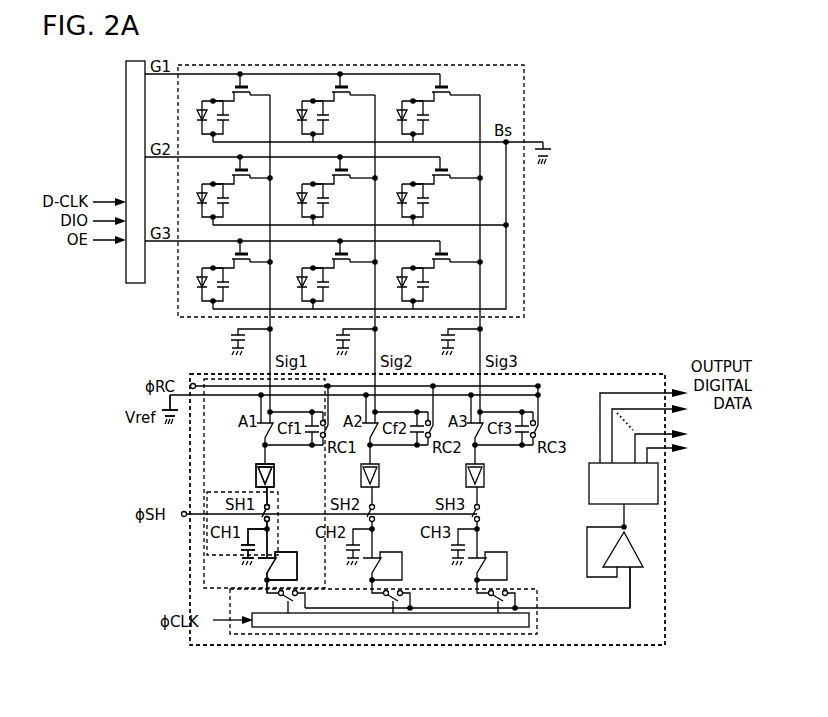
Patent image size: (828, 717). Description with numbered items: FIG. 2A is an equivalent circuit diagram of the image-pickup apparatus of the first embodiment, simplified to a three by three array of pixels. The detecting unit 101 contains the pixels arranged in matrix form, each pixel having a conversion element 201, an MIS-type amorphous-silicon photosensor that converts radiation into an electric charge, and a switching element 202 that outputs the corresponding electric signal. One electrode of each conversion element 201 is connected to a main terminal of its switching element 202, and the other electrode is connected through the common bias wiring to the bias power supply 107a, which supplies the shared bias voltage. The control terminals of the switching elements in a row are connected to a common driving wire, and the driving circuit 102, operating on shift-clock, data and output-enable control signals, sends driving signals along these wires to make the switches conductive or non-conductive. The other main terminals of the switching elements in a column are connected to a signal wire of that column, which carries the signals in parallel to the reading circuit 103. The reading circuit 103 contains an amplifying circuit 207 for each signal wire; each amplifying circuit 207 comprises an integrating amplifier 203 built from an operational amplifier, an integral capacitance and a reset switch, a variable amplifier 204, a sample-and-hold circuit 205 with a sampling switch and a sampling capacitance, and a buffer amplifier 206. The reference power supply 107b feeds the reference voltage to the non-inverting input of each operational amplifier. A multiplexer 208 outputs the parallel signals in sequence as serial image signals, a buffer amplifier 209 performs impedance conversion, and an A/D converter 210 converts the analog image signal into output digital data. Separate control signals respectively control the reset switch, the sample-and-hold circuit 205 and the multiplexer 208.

The detecting unit 101 is at (270, 64).
The driving circuit 102 is at (126, 88).
The reading circuit 103 is at (187, 466).
The bias power supply 107a is at (548, 137).
The reference power supply 107b is at (165, 402).
The conversion element 201 is at (422, 100).
The switching element 202 is at (448, 84).
The integrating amplifier 203 is at (525, 400).
The variable amplifier 204 is at (257, 473).
The sample-and-hold circuit 205 is at (210, 522).
The buffer amplifier 206 is at (263, 568).
The amplifying circuit 207 is at (217, 440).
The multiplexer 208 is at (243, 637).
The buffer amplifier 209 is at (636, 550).
The A/D converter 210 is at (663, 483).